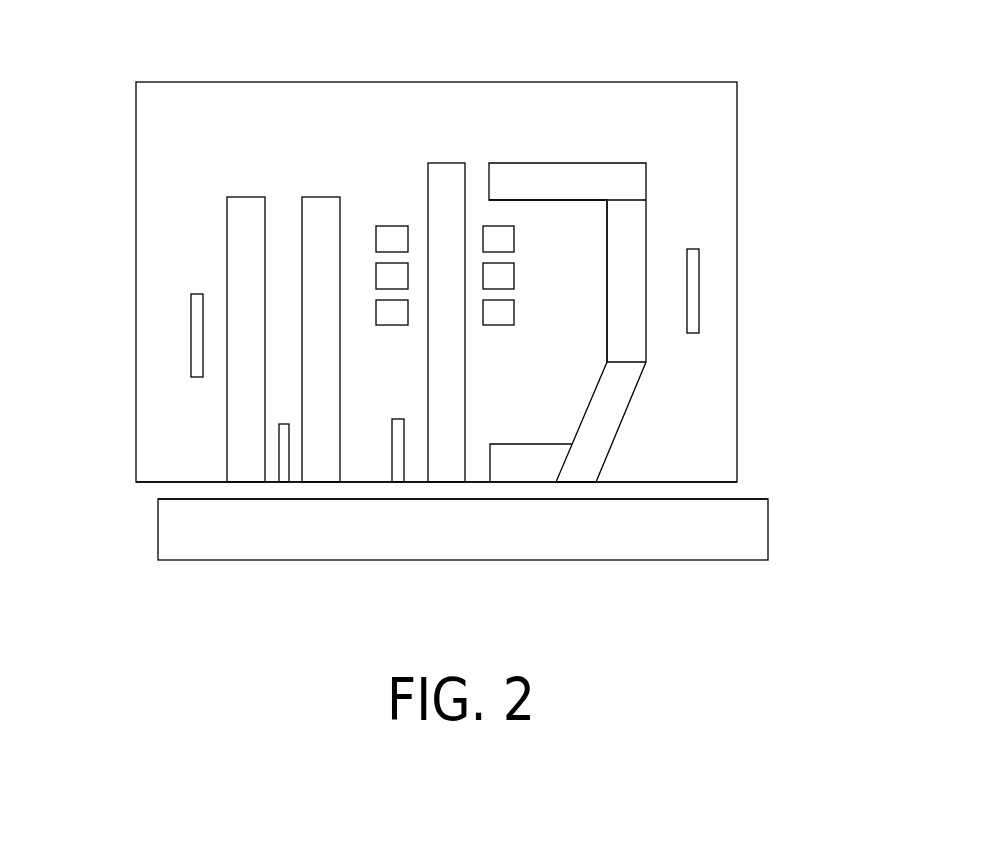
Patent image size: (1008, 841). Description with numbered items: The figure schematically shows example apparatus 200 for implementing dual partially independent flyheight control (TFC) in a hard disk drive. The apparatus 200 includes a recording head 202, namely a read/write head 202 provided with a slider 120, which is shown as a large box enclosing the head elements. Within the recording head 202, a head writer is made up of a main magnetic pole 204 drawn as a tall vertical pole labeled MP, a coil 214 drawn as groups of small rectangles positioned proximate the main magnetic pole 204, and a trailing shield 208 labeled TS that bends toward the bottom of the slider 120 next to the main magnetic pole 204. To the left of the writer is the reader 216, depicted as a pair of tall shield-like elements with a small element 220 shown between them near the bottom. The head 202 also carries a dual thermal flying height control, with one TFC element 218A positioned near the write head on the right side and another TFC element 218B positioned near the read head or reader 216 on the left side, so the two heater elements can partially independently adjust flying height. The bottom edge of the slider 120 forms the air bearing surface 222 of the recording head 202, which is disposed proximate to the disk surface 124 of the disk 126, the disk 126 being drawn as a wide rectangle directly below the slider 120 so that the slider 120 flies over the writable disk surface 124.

The apparatus 200 is at (452, 34).
The slider 120 is at (718, 108).
The recording head 202 is at (271, 140).
The reader 216 is at (274, 189).
The coil 214 is at (387, 212).
The main magnetic pole 204 is at (446, 322).
The trailing shield 208 is at (513, 465).
The read sensor 220 is at (397, 419).
The thermal flying height control 218A is at (697, 248).
The thermal flying height control 218B is at (192, 293).
The air bearing surface 222 is at (727, 482).
The disk 126 is at (750, 535).
The disk surface 124 is at (193, 499).